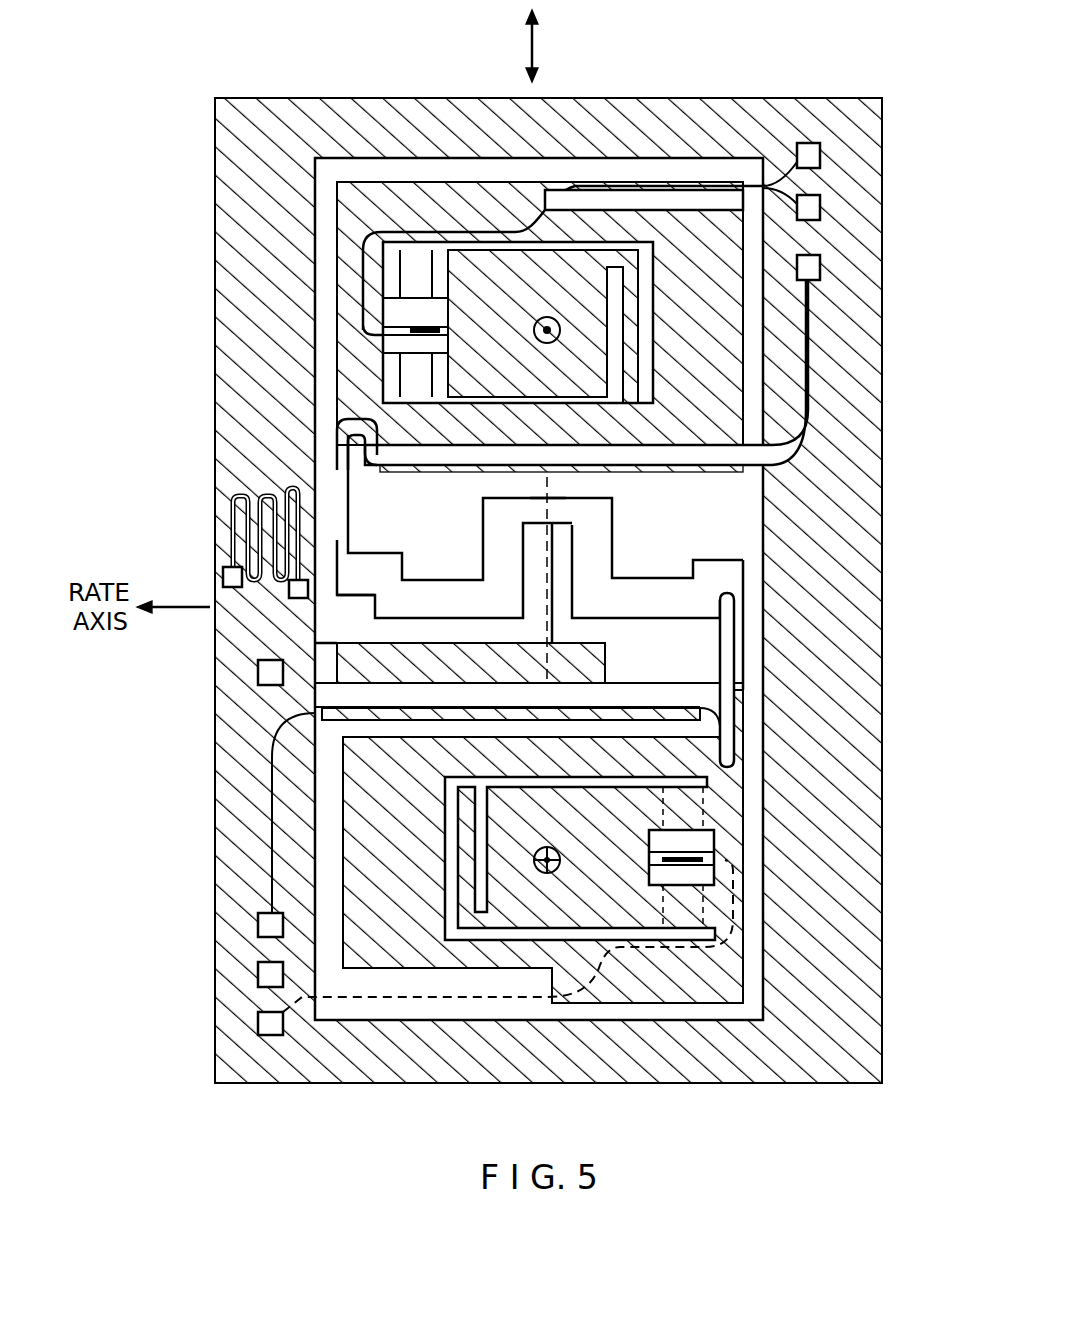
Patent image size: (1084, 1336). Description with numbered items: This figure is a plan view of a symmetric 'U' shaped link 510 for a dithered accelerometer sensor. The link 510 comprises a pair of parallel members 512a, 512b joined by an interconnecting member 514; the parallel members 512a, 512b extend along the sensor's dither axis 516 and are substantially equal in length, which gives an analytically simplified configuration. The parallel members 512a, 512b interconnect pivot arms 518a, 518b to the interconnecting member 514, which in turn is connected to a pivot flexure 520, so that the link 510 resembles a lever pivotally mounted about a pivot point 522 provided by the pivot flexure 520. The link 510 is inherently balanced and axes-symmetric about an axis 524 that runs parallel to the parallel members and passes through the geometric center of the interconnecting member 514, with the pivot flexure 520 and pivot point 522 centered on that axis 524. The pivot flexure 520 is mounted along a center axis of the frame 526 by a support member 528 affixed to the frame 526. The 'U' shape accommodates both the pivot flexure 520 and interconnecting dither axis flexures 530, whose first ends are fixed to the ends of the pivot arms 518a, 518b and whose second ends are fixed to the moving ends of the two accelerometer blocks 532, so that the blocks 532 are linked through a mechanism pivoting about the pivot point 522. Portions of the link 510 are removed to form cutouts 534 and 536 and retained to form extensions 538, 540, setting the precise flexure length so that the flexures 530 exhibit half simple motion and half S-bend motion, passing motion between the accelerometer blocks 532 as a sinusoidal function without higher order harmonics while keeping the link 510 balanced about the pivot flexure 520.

The link 510 is at (612, 540).
The parallel member 512a is at (490, 523).
The parallel member 512b is at (613, 513).
The interconnecting member 514 is at (505, 492).
The dither axis 516 is at (535, 52).
The pivot arm 518a is at (445, 558).
The pivot arm 518b is at (643, 620).
The pivot flexure 520 is at (543, 610).
The pivot point 522 is at (548, 588).
The axis 524 is at (548, 684).
The frame 526 is at (882, 1045).
The support member 528 is at (352, 624).
The interconnecting dither axis flexure 530 is at (362, 552).
The accelerometer block 532 is at (338, 298).
The cutout 534 is at (332, 605).
The cutout 536 is at (727, 602).
The extension 538 is at (347, 505).
The extension 540 is at (727, 558).